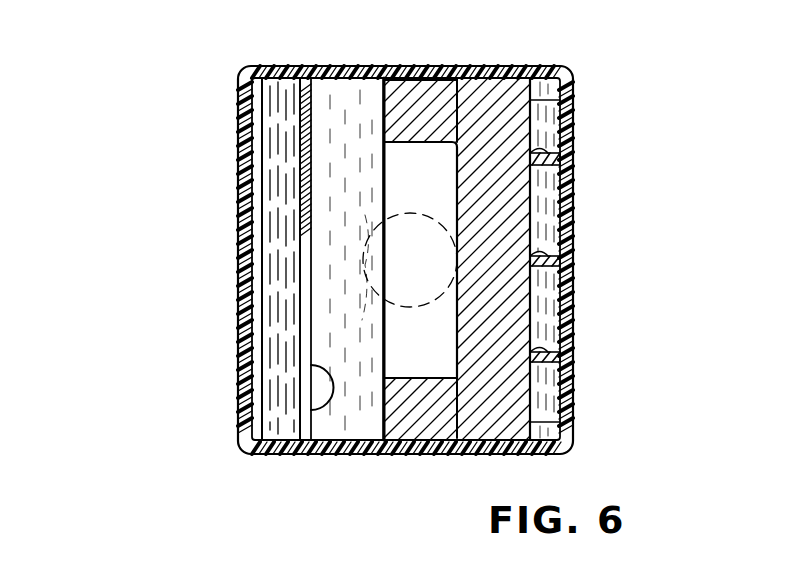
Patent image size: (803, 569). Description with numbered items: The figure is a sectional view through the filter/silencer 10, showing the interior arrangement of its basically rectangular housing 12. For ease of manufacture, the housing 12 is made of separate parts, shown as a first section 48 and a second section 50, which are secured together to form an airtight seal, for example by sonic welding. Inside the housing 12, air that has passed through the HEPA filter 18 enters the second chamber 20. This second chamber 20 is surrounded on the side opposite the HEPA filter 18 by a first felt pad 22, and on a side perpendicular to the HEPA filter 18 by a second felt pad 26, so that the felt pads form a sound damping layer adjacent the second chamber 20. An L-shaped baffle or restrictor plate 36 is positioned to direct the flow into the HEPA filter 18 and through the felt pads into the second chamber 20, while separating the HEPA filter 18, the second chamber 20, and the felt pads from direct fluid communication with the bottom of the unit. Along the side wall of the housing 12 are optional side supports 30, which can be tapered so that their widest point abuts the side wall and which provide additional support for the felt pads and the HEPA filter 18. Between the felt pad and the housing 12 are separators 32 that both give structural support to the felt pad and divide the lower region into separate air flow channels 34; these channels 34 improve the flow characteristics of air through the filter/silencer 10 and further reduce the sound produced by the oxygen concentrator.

The filter/silencer 10 is at (140, 108).
The housing 12 is at (245, 226).
The HEPA filter 18 is at (327, 138).
The second chamber 20 is at (418, 180).
The first felt pad 22 is at (487, 110).
The second felt pad 26 is at (405, 108).
The side supports 30 is at (548, 86).
The separators 32 is at (543, 152).
The air flow channels 34 is at (547, 120).
The restrictor plate 36 is at (310, 390).
The first section 48 is at (244, 78).
The second section 50 is at (291, 70).